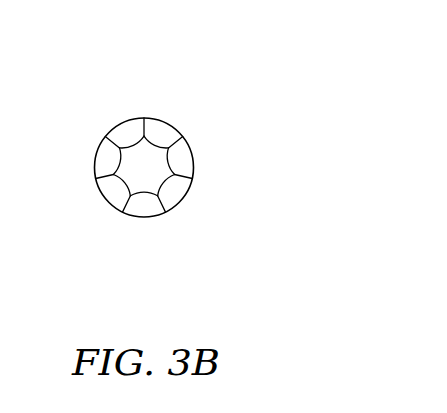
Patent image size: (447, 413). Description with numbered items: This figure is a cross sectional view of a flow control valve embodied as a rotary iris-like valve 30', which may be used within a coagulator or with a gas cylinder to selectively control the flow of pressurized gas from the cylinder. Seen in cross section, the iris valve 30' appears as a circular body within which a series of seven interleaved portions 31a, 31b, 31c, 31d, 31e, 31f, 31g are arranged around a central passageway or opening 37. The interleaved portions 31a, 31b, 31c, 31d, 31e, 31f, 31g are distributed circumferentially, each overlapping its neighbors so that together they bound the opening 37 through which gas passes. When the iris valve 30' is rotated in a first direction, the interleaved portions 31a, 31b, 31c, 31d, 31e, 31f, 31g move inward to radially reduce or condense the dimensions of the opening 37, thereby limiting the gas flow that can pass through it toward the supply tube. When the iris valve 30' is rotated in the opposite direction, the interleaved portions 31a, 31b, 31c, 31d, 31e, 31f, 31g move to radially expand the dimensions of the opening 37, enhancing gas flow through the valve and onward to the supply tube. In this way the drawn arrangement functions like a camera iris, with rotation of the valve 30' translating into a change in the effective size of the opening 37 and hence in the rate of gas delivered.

The rotary iris-like valve 30' is at (182, 203).
The passageway or opening 37 is at (122, 163).
The interleaved portion 31a is at (163, 130).
The interleaved portion 31b is at (182, 152).
The interleaved portion 31c is at (182, 190).
The interleaved portion 31d is at (145, 212).
The interleaved portion 31e is at (112, 197).
The interleaved portion 31f is at (100, 168).
The interleaved portion 31g is at (122, 132).